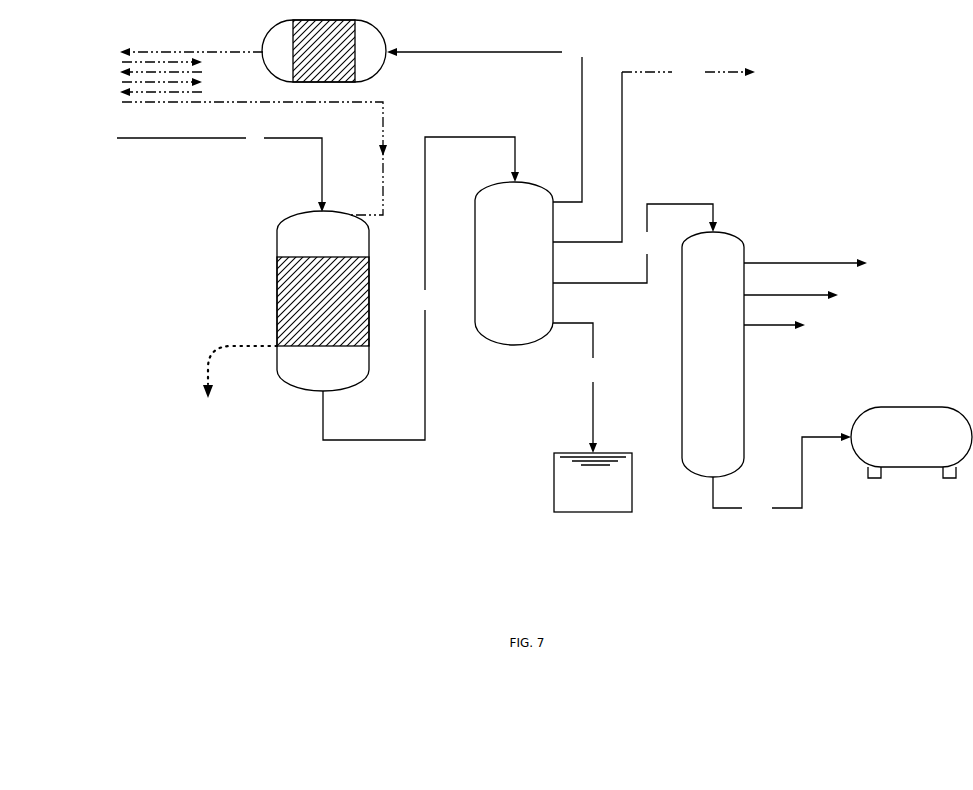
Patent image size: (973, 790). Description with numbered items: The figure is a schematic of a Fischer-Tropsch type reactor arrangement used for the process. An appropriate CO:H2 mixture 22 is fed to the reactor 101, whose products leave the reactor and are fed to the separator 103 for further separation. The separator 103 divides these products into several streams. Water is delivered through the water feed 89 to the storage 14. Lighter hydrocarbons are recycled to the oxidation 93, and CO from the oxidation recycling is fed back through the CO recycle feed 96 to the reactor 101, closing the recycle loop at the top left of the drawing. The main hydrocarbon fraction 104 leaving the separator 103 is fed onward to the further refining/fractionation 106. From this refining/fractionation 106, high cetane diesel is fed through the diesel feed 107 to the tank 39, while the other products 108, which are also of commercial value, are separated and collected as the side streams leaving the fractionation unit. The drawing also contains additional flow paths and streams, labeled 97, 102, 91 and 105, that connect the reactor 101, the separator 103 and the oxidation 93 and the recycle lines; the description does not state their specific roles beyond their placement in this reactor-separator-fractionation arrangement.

The oxidation 93 is at (324, 51).
The CO recycle feed 96 is at (253, 125).
The CO:H2 mixture 22 is at (221, 171).
The reactor 101 is at (323, 301).
The purge stream 97 is at (238, 385).
The reactor effluent line 102 is at (421, 288).
The separator 103 is at (514, 263).
The recycle line 91 is at (484, 123).
The vapor outlet line 105 is at (654, 153).
The main hydrocarbon fraction 104 is at (635, 243).
The water feed 89 is at (577, 388).
The storage 14 is at (593, 482).
The refining/fractionation 106 is at (713, 354).
The other products 108 is at (805, 294).
The diesel feed 107 is at (782, 470).
The tank 39 is at (911, 442).